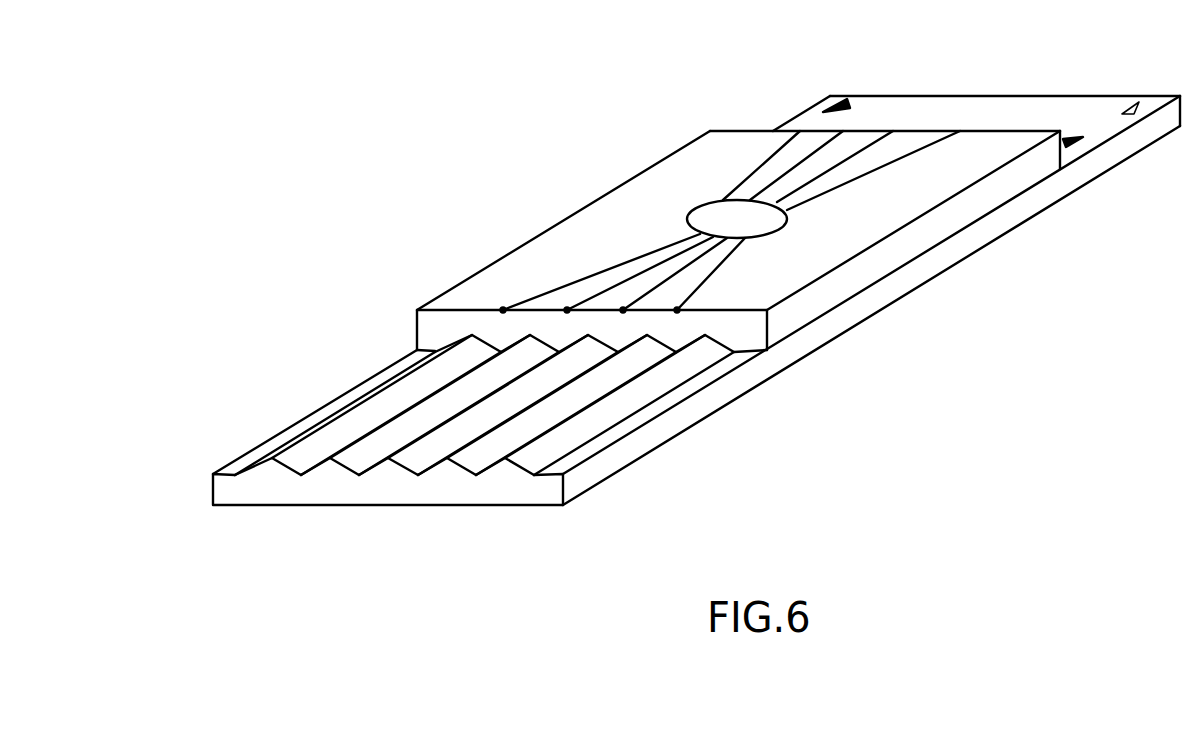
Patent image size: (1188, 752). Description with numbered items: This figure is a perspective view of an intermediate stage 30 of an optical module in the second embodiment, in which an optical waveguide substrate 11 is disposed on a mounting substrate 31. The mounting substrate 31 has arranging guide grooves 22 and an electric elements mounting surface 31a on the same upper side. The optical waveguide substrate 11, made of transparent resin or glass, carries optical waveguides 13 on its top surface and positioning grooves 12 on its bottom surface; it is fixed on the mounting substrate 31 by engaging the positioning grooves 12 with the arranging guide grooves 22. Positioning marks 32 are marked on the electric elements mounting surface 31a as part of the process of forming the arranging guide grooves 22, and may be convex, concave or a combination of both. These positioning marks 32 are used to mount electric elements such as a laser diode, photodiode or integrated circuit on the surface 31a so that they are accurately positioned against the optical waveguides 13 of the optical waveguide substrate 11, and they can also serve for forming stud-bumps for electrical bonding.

The optical waveguide substrate 11 is at (637, 175).
The positioning grooves 12 is at (720, 344).
The optical waveguides 13 is at (545, 291).
The arranging guide grooves 22 is at (461, 464).
The intermediate stage 30 is at (696, 300).
The mounting substrate 31 is at (696, 269).
The electric elements mounting surface 31a is at (978, 110).
The positioning marks 32 is at (849, 103).